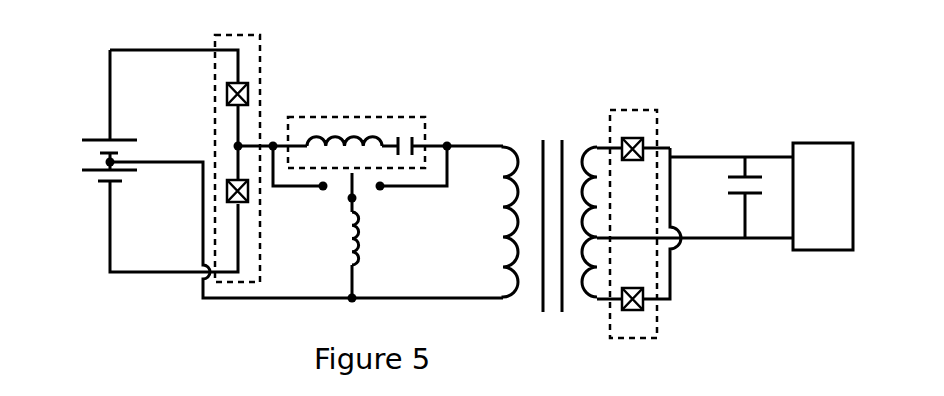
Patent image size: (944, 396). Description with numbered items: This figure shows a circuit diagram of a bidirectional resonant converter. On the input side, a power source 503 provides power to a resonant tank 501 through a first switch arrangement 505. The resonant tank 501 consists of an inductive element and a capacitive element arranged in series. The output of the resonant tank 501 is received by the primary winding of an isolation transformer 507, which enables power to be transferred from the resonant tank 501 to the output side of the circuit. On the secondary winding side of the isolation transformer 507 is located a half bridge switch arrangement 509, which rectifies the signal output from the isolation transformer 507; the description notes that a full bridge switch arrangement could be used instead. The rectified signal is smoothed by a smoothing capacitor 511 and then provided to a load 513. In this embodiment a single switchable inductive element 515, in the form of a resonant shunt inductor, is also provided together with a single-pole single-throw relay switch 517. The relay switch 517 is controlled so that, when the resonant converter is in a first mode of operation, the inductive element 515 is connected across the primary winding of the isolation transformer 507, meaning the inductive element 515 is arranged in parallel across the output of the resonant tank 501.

The resonant tank 501 is at (360, 130).
The power source 503 is at (92, 160).
The first switch arrangement 505 is at (237, 144).
The isolation transformer 507 is at (562, 211).
The half bridge switch arrangement 509 is at (640, 210).
The smoothing capacitor 511 is at (762, 266).
The load 513 is at (823, 196).
The switchable inductive element 515 is at (407, 271).
The single-pole single-throw relay switch 517 is at (425, 211).